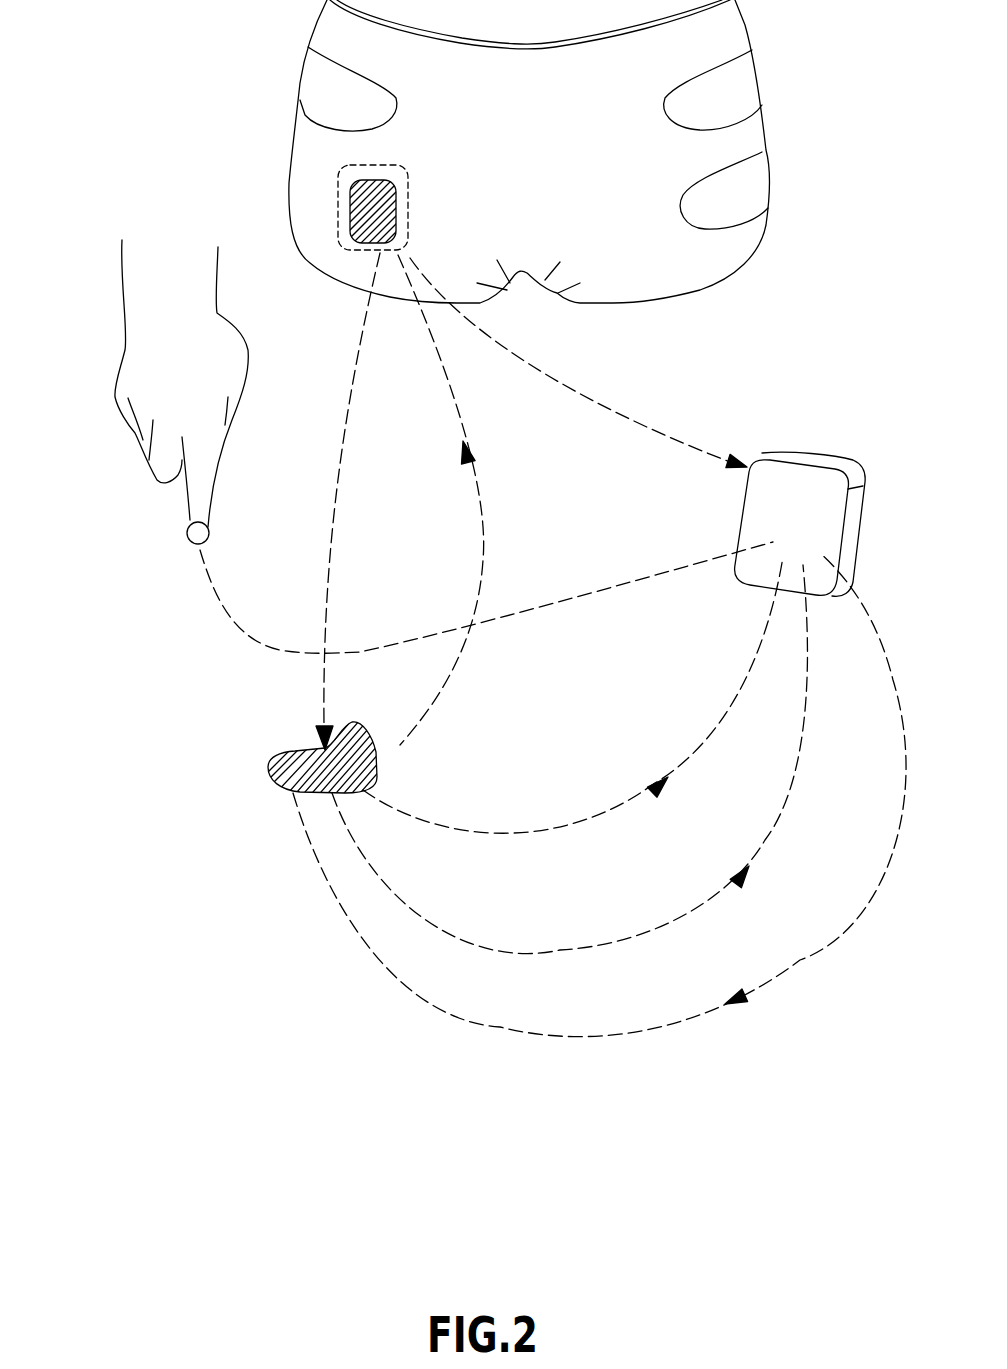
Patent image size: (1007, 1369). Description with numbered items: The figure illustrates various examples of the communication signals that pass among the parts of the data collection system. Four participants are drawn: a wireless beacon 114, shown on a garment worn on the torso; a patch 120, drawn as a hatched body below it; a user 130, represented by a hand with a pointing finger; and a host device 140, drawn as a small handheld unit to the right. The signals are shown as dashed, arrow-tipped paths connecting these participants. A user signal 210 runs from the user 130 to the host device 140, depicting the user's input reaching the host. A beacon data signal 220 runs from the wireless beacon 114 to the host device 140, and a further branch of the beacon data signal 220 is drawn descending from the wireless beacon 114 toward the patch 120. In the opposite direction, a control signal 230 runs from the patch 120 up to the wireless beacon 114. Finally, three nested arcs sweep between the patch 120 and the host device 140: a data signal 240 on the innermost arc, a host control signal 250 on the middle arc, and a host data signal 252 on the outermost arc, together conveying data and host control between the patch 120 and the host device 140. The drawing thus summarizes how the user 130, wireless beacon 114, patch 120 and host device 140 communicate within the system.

The wireless beacon 114 is at (345, 192).
The patch 120 is at (270, 772).
The user 130 is at (147, 375).
The host device 140 is at (835, 470).
The user signal 210 is at (257, 640).
The beacon data signal 220 is at (603, 410).
The control signal 230 is at (478, 497).
The data signal 240 is at (405, 810).
The host control signal 250 is at (430, 920).
The host data signal 252 is at (834, 933).